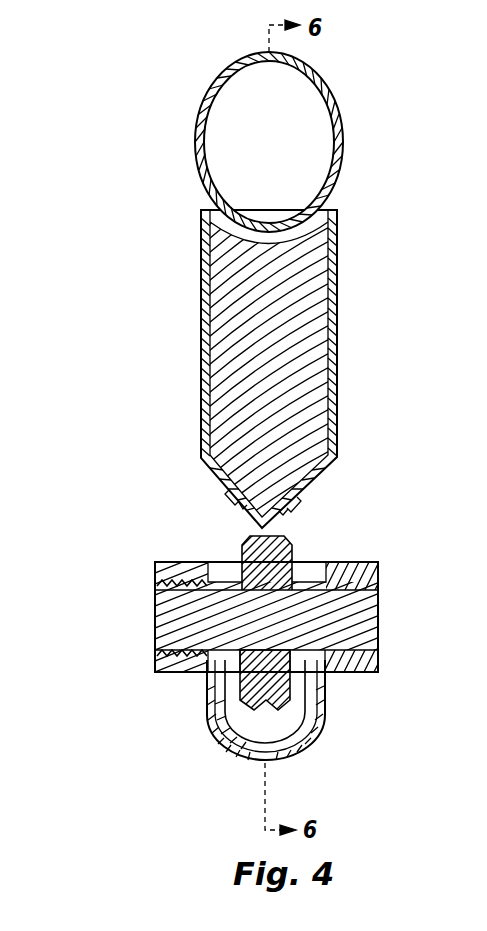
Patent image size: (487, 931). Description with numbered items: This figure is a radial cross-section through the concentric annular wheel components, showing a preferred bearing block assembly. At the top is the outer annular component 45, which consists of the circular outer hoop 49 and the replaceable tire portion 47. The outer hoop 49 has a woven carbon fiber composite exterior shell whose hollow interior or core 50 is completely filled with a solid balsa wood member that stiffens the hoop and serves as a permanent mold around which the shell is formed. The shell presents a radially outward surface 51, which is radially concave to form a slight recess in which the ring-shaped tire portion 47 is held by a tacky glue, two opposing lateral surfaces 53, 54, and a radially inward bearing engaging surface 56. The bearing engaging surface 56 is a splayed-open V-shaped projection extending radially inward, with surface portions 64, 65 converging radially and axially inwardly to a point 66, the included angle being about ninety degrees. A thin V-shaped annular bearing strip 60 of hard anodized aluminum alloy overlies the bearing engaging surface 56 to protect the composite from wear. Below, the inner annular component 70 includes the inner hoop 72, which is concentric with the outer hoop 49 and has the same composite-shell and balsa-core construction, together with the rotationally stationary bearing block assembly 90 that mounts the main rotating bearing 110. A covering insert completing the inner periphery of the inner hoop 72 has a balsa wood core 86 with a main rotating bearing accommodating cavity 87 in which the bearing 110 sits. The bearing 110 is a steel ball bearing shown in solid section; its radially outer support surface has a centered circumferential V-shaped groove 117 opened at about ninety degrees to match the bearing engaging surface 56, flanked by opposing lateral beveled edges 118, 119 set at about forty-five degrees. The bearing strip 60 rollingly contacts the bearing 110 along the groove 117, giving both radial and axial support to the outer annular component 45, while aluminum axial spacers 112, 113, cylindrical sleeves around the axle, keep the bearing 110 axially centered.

The outer annular component 45 is at (155, 306).
The tire portion 47 is at (338, 105).
The outer hoop 49 is at (358, 306).
The core 50 is at (312, 372).
The radially outward surface 51 is at (240, 270).
The lateral surface 53 is at (205, 375).
The lateral surface 54 is at (337, 418).
The bearing engaging surface 56 is at (340, 480).
The bearing strip 60 is at (292, 515).
The surface portion 64 is at (213, 489).
The surface portion 65 is at (297, 502).
The point 66 is at (240, 490).
The inner annular component 70 is at (403, 647).
The inner hoop 72 is at (322, 718).
The balsa wood core 86 is at (214, 722).
The main rotating bearing accommodating cavity 87 is at (318, 690).
The bearing block assembly 90 is at (142, 664).
The main rotating bearing 110 is at (280, 543).
The axial spacer 112 is at (208, 700).
The axial spacer 113 is at (327, 678).
The V-shaped groove 117 is at (266, 705).
The beveled edge 118 is at (240, 766).
The beveled edge 119 is at (308, 742).